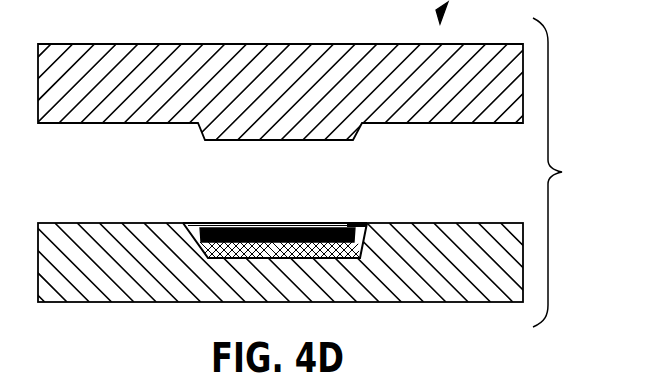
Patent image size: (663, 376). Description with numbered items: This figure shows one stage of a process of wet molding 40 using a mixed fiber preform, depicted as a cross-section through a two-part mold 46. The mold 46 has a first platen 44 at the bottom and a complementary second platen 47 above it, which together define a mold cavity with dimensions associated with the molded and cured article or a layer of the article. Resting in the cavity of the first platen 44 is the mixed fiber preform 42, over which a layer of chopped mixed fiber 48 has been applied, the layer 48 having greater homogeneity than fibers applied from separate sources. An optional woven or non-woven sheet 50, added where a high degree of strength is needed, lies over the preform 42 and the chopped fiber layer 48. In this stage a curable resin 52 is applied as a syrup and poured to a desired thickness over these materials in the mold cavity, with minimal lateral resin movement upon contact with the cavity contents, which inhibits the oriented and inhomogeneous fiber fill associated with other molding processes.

The process of wet molding 40 is at (485, 373).
The mixed fiber preform 42 is at (363, 222).
The first platen 44 is at (437, 278).
The mold 46 is at (564, 172).
The second platen 47 is at (420, 100).
The layer of chopped mixed fiber 48 is at (322, 222).
The woven or non-woven sheet 50 is at (277, 222).
The curable resin 52 is at (230, 222).